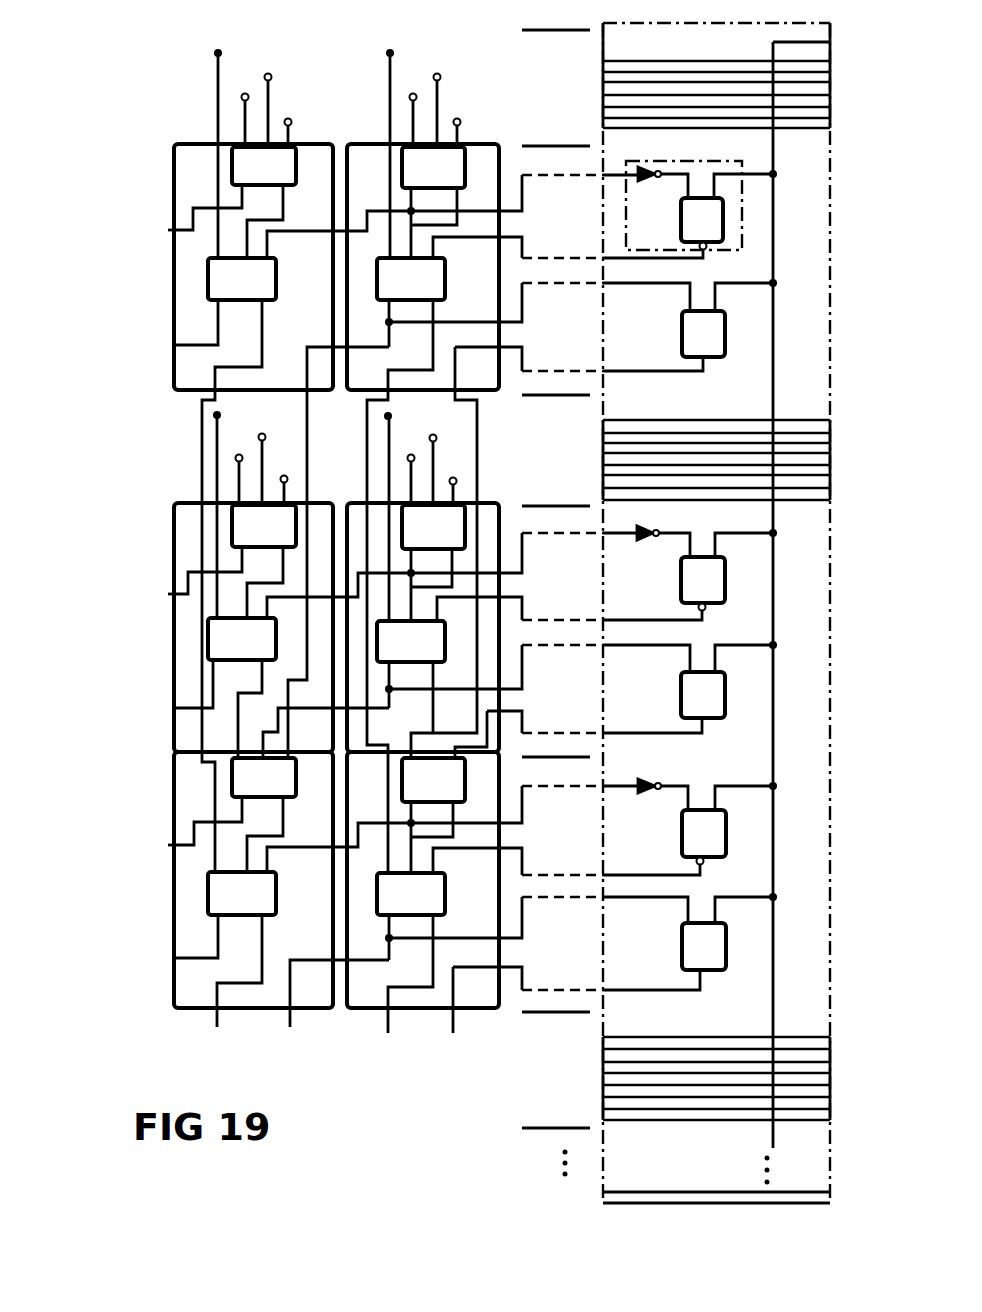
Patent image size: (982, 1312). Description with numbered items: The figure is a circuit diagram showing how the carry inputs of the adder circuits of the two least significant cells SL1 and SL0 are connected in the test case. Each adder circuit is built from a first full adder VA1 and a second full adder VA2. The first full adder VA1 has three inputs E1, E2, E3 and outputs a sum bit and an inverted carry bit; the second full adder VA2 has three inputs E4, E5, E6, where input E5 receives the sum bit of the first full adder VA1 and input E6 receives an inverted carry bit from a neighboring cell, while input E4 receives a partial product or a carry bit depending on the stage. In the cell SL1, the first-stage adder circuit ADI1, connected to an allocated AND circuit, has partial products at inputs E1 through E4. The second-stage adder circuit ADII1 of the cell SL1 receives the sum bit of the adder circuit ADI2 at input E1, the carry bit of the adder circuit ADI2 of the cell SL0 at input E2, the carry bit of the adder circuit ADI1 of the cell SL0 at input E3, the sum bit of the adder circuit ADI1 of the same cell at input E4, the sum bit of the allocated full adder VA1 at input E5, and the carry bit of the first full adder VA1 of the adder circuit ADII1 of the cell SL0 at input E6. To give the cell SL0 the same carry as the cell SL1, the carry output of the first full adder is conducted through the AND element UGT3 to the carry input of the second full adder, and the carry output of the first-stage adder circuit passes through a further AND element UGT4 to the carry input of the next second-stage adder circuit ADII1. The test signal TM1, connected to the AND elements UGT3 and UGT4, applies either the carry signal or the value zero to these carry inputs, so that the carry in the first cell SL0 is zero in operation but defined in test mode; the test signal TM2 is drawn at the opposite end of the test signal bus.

The cell SL1 is at (281, 513).
The cell SL0 is at (475, 564).
The full adder VA1 is at (130, 127).
The full adder VA2 is at (123, 307).
The input E1 is at (230, 409).
The input E2 is at (264, 389).
The input E3 is at (296, 422).
The input E4 is at (206, 862).
The input E5 is at (251, 528).
The input E6 is at (394, 528).
The adder circuit ADI1 is at (150, 232).
The adder circuit ADI2 is at (148, 631).
The adder circuit ADII1 is at (147, 873).
The test signal TM1 is at (725, 613).
The second control line bus TM2 is at (745, 1192).
The AND element UGT3 is at (725, 224).
The AND element UGT4 is at (725, 336).
The AND circuit AND is at (725, 209).